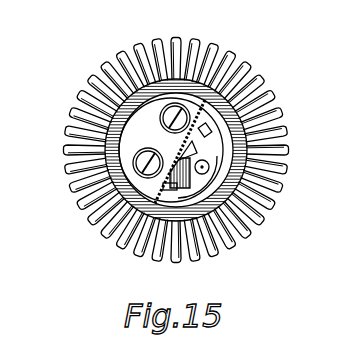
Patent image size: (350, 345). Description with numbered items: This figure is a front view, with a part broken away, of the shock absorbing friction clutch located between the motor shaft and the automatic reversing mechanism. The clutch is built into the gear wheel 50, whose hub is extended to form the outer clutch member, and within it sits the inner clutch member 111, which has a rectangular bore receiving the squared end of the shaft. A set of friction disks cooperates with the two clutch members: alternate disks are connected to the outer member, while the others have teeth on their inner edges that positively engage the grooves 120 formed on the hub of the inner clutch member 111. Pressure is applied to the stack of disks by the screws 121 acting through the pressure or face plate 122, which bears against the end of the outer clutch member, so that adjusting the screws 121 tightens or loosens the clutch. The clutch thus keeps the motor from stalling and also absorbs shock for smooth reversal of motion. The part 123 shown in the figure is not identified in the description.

The gear wheel 50 is at (64, 151).
The hub 111 is at (210, 177).
The key 120 is at (211, 130).
The screws 121 is at (138, 156).
The bore wall 122 is at (255, 92).
The pawl 123 is at (196, 154).